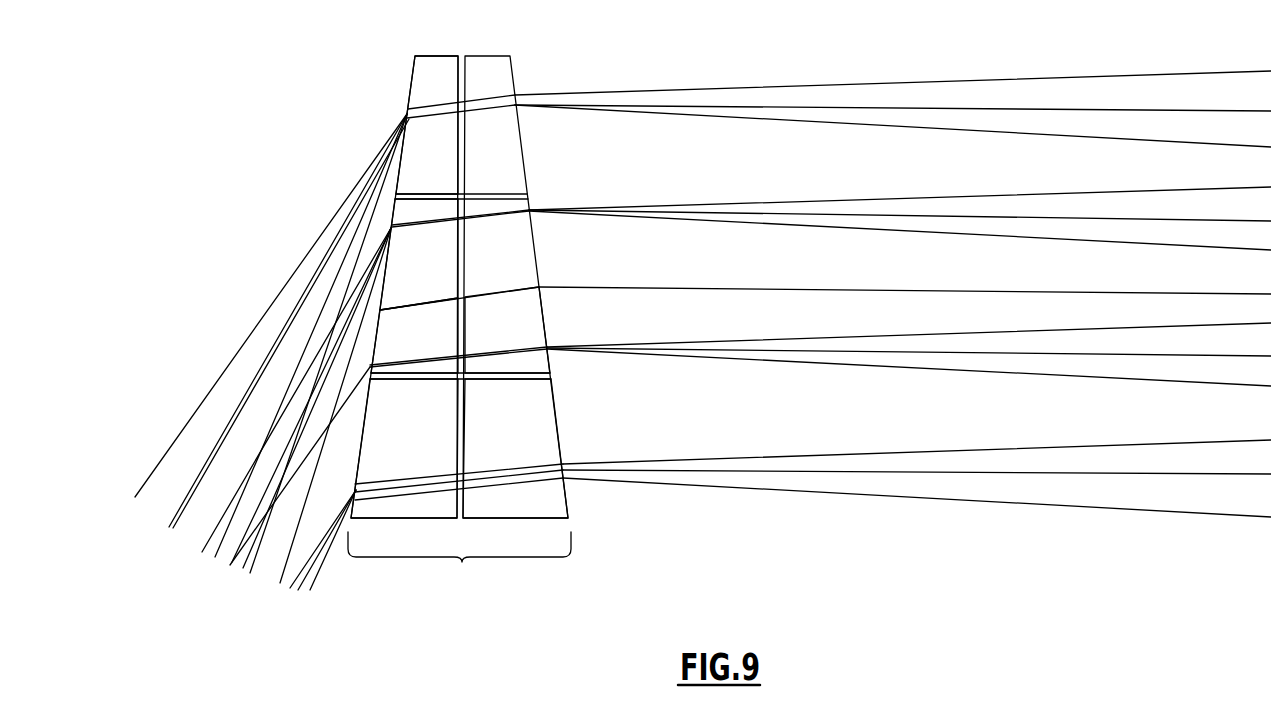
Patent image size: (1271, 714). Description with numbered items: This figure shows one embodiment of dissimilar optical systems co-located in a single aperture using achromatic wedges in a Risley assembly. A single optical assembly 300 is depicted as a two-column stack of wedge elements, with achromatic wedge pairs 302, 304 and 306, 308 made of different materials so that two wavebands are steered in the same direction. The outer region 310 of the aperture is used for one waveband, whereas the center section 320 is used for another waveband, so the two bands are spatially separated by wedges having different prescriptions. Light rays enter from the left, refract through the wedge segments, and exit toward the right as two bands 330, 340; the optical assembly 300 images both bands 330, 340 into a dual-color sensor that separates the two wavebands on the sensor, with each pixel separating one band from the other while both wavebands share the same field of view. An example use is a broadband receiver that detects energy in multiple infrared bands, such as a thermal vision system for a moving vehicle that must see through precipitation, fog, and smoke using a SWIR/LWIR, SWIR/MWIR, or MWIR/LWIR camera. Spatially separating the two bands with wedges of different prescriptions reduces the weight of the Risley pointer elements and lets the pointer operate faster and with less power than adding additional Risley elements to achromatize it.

The optical assembly 300 is at (462, 560).
The achromatic wedge 302 is at (437, 433).
The achromatic wedge 304 is at (437, 342).
The achromatic wedge 306 is at (522, 433).
The achromatic wedge 308 is at (522, 335).
The outer region 310 is at (420, 167).
The center section 320 is at (421, 276).
The waveband 330 is at (597, 107).
The waveband 340 is at (743, 228).